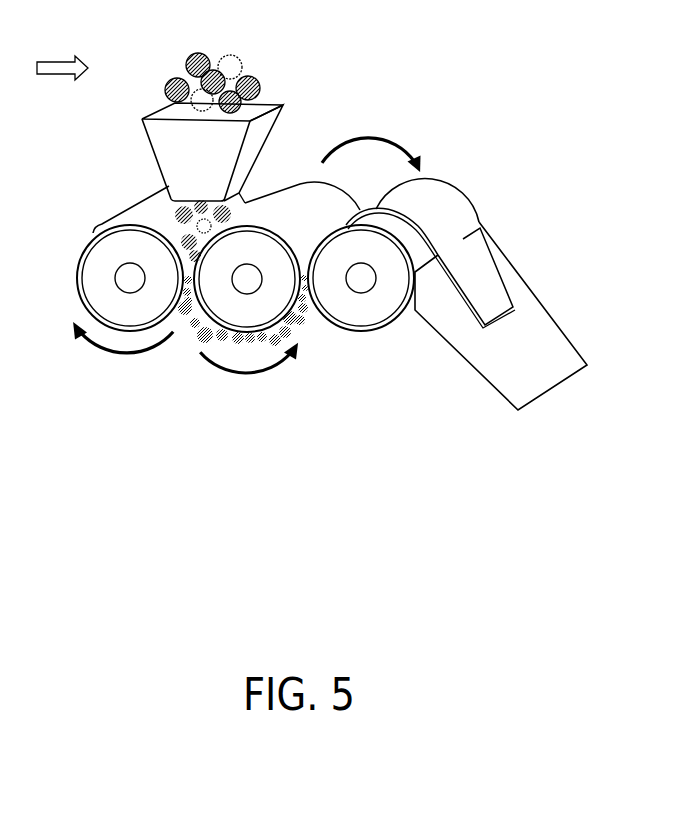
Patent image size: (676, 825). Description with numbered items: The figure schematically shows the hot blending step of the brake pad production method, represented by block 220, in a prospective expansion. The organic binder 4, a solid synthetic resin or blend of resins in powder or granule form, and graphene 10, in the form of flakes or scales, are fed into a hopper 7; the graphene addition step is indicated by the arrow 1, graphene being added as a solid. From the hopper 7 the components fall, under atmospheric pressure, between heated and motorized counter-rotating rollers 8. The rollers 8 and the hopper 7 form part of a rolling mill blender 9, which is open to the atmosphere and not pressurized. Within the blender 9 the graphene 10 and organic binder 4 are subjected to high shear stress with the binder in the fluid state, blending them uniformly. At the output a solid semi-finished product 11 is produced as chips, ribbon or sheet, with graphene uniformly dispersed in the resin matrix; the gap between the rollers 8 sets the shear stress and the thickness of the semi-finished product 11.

The arrow 1 is at (60, 67).
The organic binder 4 is at (218, 57).
The hopper 7 is at (172, 172).
The rollers 8 is at (95, 277).
The rolling mill blender 9 is at (333, 366).
The graphene 10 is at (188, 63).
The semi-finished product 11 is at (487, 285).
The block 220 is at (495, 120).